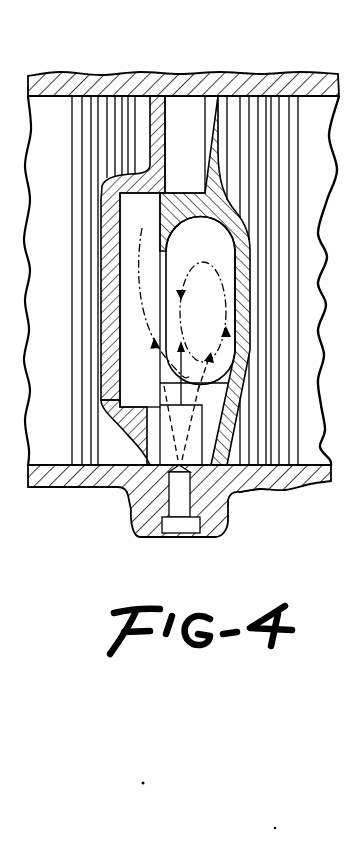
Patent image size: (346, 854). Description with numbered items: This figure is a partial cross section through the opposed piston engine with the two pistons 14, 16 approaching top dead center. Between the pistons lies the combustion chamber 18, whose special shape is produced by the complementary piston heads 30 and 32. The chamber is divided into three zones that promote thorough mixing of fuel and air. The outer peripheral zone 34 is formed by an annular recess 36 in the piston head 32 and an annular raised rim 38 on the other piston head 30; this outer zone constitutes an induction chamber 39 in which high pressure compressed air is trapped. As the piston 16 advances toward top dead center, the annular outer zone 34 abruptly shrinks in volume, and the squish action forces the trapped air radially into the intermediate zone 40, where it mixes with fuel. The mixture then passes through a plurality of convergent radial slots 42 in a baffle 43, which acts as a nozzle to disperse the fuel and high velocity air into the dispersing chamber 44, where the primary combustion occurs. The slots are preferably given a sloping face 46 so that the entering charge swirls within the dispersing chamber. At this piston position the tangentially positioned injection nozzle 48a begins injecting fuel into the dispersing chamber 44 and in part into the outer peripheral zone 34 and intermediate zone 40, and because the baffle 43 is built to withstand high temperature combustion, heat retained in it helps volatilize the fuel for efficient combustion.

The piston 14 is at (92, 102).
The piston 16 is at (283, 250).
The combustion chamber 18 is at (133, 208).
The piston head 30 is at (100, 487).
The piston head 32 is at (233, 466).
The outer peripheral zone 34 is at (183, 106).
The annular recess 36 is at (196, 104).
The annular raised rim 38 is at (177, 108).
The induction chamber 39 is at (198, 165).
The intermediate zone 40 is at (130, 400).
The convergent radial slots 42 is at (170, 371).
The baffle 43 is at (160, 253).
The dispersing chamber 44 is at (215, 258).
The sloping face 46 is at (163, 328).
The injection nozzle 48a is at (190, 534).